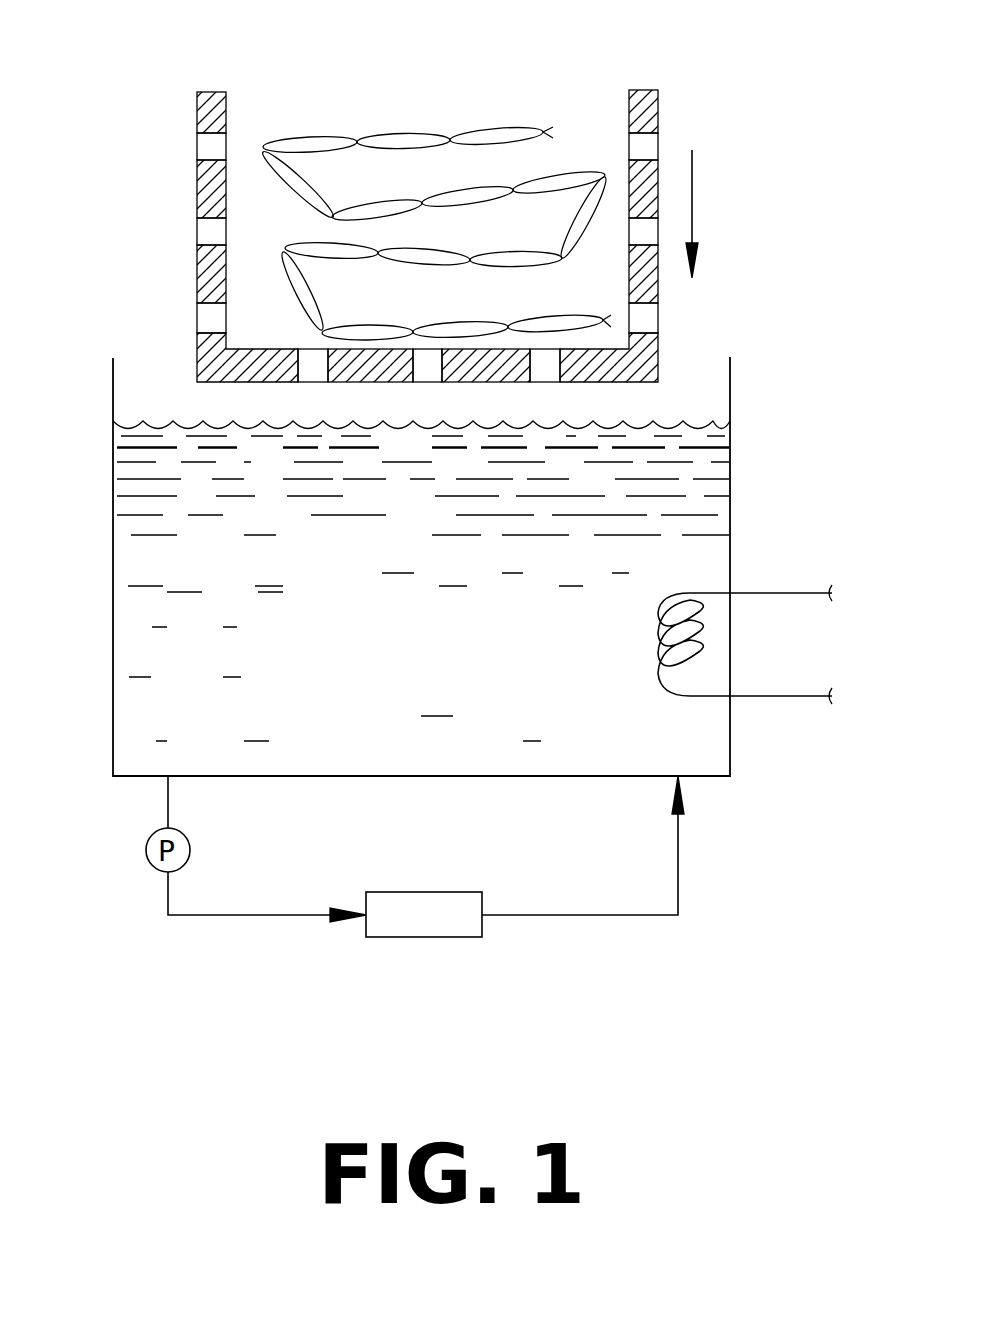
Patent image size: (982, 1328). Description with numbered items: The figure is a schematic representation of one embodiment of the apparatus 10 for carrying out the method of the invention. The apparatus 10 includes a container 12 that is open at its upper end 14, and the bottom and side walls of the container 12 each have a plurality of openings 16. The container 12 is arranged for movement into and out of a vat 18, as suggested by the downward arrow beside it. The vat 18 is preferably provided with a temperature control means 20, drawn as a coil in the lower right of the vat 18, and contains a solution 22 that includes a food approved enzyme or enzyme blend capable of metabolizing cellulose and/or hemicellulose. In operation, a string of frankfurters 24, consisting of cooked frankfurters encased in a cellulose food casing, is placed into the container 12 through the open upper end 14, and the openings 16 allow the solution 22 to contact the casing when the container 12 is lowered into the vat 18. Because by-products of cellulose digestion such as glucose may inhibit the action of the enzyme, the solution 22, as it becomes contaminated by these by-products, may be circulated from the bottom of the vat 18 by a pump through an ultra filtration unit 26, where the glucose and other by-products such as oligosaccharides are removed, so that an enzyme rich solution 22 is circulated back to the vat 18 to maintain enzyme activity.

The apparatus 10 is at (799, 142).
The container 12 is at (197, 200).
The upper end 14 is at (277, 92).
The openings 16 is at (543, 382).
The vat 18 is at (730, 505).
The temperature control means 20 is at (658, 631).
The solution 22 is at (386, 659).
The string of frankfurters 24 is at (390, 133).
The ultra filtration unit 26 is at (423, 938).